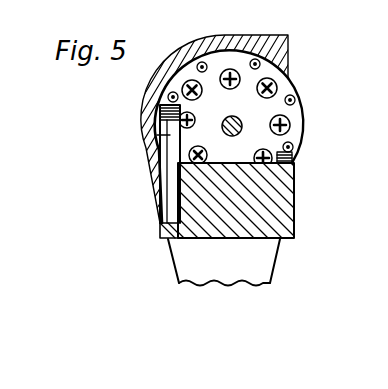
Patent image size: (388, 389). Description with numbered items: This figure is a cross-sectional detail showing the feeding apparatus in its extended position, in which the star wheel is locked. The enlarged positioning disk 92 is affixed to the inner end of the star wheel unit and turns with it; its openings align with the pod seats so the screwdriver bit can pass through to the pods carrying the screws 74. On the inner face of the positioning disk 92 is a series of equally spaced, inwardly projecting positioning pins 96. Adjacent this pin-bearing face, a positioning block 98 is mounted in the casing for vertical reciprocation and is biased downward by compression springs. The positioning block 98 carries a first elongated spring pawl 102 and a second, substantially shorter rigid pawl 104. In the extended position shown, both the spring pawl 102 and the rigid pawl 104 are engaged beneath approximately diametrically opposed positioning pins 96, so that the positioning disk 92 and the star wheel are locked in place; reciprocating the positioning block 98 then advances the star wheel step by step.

The positioning disk 92 is at (278, 58).
The screws 74 is at (288, 118).
The positioning pins 96 is at (296, 146).
The rigid pawl 104 is at (294, 158).
The spring pawl 102 is at (163, 138).
The positioning block 98 is at (192, 233).